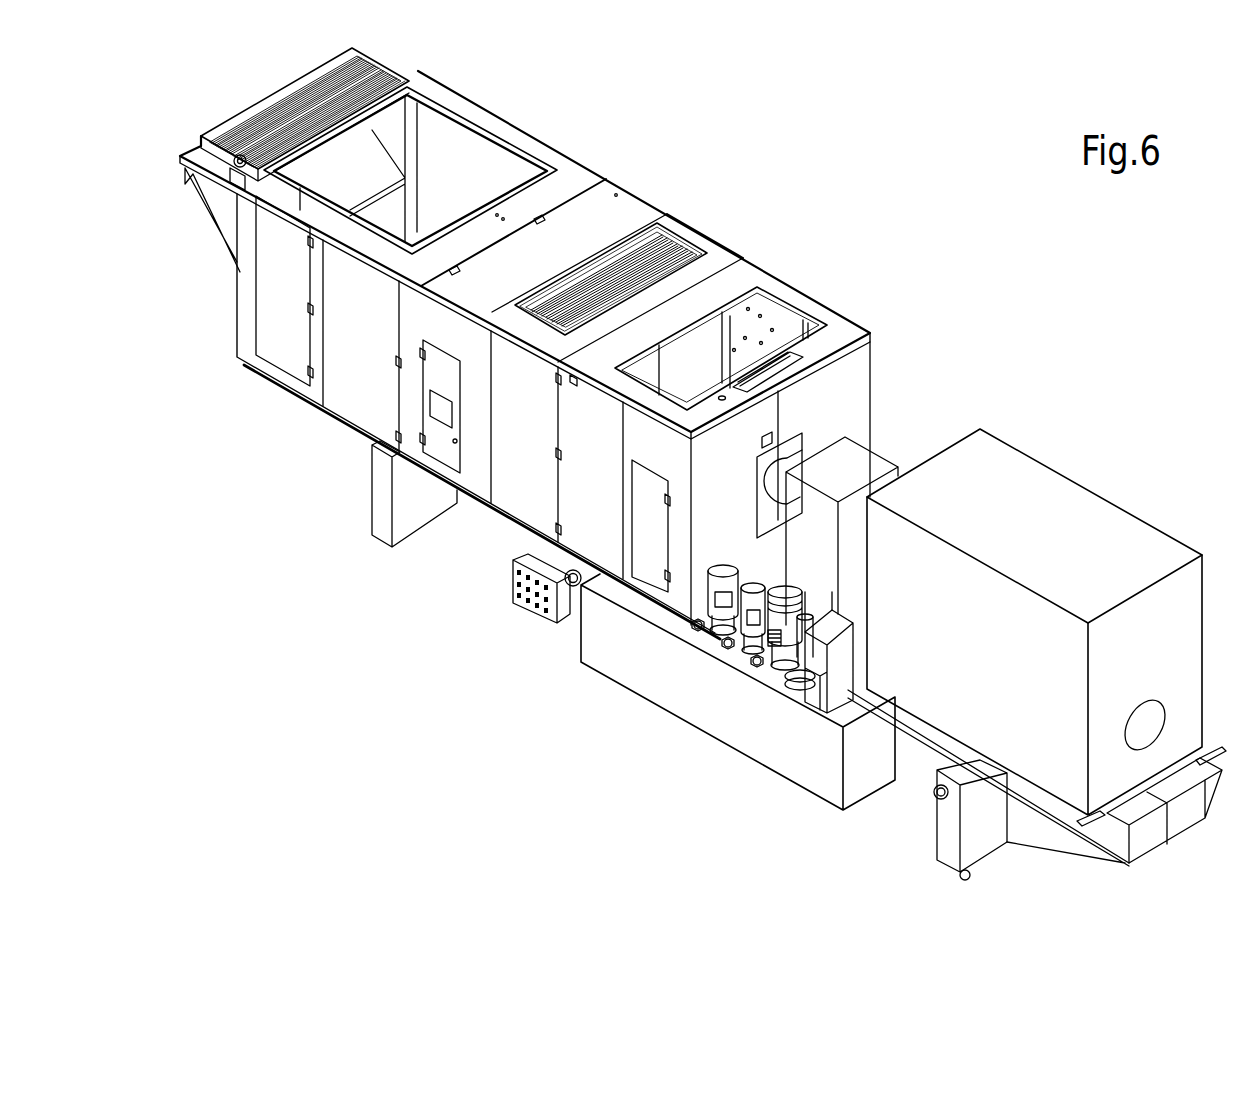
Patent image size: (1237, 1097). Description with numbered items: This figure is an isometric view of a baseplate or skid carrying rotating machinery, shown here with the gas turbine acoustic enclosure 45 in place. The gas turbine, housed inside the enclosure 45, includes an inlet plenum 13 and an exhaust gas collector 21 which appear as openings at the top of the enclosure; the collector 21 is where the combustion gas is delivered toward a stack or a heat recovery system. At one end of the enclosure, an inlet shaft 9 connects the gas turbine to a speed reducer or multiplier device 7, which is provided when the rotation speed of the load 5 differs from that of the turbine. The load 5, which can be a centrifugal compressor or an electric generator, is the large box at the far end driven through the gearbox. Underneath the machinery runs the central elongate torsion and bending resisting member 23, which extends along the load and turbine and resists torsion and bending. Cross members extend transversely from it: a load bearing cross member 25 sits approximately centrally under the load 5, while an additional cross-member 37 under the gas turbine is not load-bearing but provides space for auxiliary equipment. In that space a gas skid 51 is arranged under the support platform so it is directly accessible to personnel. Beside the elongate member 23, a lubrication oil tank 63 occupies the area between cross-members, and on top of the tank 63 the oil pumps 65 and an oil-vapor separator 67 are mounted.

The load 5 is at (1062, 513).
The speed reducer or multiplier device 7 is at (853, 463).
The inlet shaft 9 is at (787, 467).
The inlet plenum 13 is at (440, 160).
The exhaust gas collector 21 is at (773, 333).
The central elongate torsion and bending resisting member 23 is at (1150, 837).
The load bearing cross member 25 is at (943, 842).
The additional cross-member 37 is at (377, 490).
The gas turbine acoustic enclosure 45 is at (628, 176).
The gas skid 51 is at (527, 624).
The lubrication oil tank 63 is at (643, 679).
The oil pumps 65 is at (787, 593).
The oil-vapor separator 67 is at (843, 665).